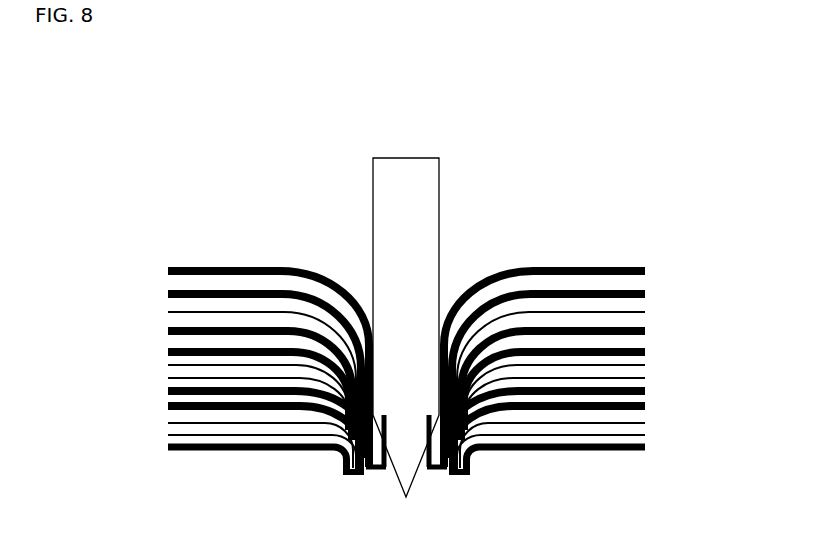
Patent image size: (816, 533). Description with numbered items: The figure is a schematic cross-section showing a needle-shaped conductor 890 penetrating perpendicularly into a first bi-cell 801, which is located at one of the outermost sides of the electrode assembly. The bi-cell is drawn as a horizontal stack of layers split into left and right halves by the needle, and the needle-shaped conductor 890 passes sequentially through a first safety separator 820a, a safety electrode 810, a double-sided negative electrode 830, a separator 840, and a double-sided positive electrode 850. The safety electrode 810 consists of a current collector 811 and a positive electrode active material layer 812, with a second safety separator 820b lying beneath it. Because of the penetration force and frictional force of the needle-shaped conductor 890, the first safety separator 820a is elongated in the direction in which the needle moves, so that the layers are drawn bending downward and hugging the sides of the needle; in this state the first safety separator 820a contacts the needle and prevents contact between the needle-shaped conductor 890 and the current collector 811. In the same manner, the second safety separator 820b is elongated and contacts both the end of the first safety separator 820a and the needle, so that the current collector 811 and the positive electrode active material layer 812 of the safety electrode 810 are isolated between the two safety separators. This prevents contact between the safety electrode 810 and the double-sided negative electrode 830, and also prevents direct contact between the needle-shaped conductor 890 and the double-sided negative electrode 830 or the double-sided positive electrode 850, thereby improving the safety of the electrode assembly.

The first bi-cell 801 is at (246, 196).
The needle-shaped conductor 890 is at (420, 158).
The safety electrode 810 is at (83, 230).
The first safety separator 820a is at (168, 273).
The current collector 811 is at (168, 302).
The positive electrode active material layer 812 is at (168, 320).
The second safety separator 820b is at (168, 336).
The double-sided negative electrode 830 is at (160, 363).
The double-sided positive electrode 850 is at (160, 403).
The separator 840 is at (647, 397).